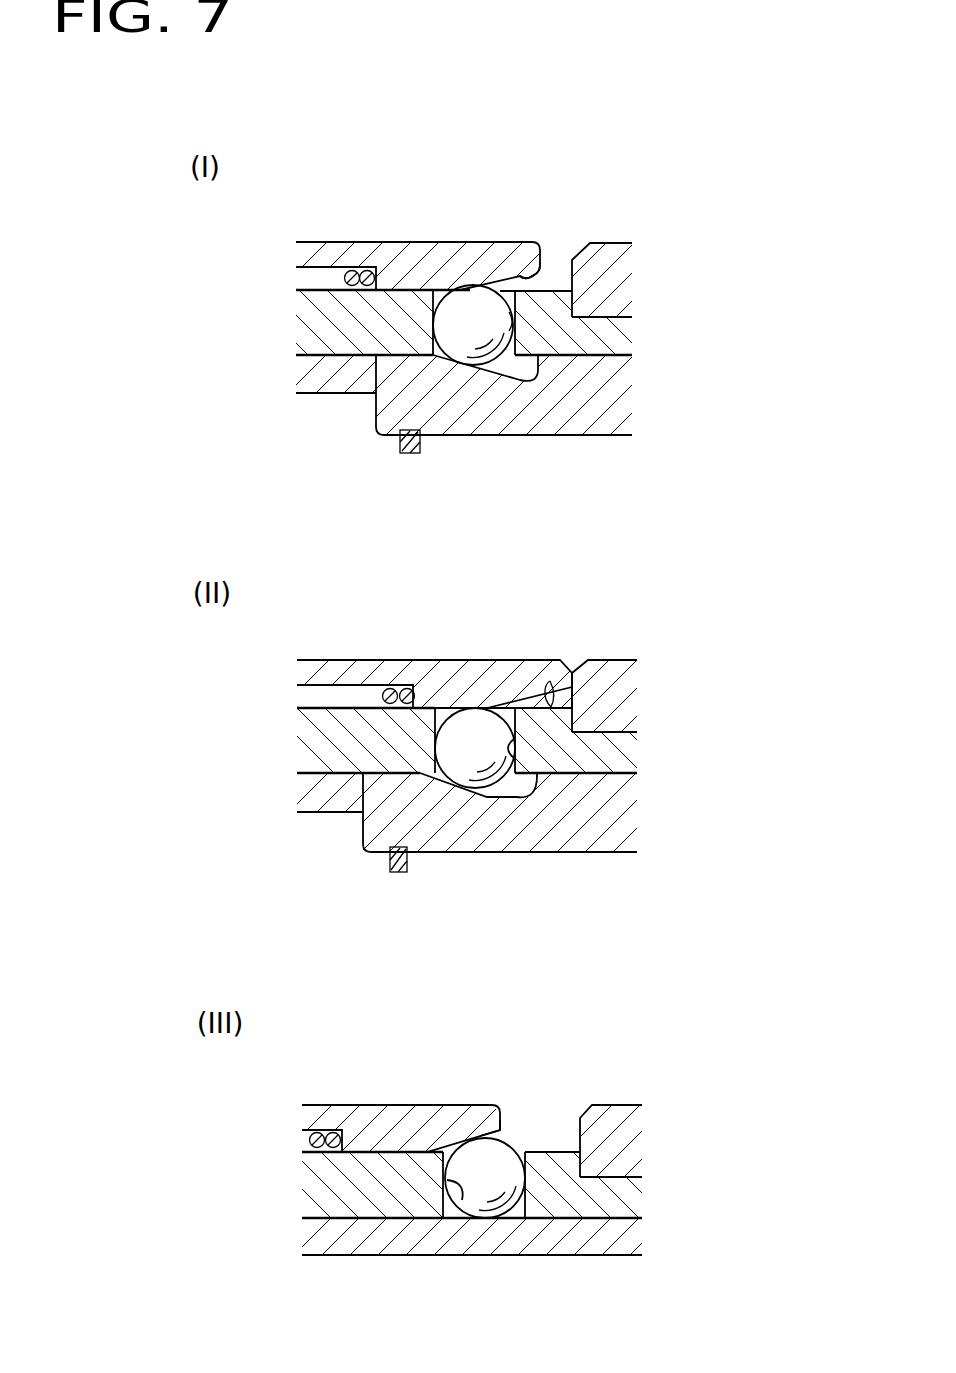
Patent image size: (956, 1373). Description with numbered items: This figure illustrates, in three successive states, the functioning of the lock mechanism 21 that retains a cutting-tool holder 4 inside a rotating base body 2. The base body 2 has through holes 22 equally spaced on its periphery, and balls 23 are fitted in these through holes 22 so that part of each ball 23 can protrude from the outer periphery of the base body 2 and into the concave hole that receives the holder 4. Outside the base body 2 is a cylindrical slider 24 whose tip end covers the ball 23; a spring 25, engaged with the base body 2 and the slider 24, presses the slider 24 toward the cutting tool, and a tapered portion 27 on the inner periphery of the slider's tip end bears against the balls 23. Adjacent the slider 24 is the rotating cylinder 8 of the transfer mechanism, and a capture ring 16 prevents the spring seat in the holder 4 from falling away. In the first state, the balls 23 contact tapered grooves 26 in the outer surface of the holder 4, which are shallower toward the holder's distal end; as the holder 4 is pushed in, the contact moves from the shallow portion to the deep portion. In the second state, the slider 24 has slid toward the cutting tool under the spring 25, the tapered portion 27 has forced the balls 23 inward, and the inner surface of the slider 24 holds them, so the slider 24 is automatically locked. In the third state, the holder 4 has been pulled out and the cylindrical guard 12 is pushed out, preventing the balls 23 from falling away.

The base body 2 is at (323, 322).
The holder 4 is at (613, 390).
The rotating cylinder 8 is at (607, 277).
The guard 12 is at (320, 375).
The capture ring 16 is at (400, 447).
The lock mechanism 21 is at (487, 236).
The through holes 22 is at (508, 323).
The balls 23 is at (463, 333).
The slider 24 is at (417, 255).
The spring 25 is at (352, 271).
The tapered grooves 26 is at (537, 367).
The tapered portion 27 is at (534, 273).